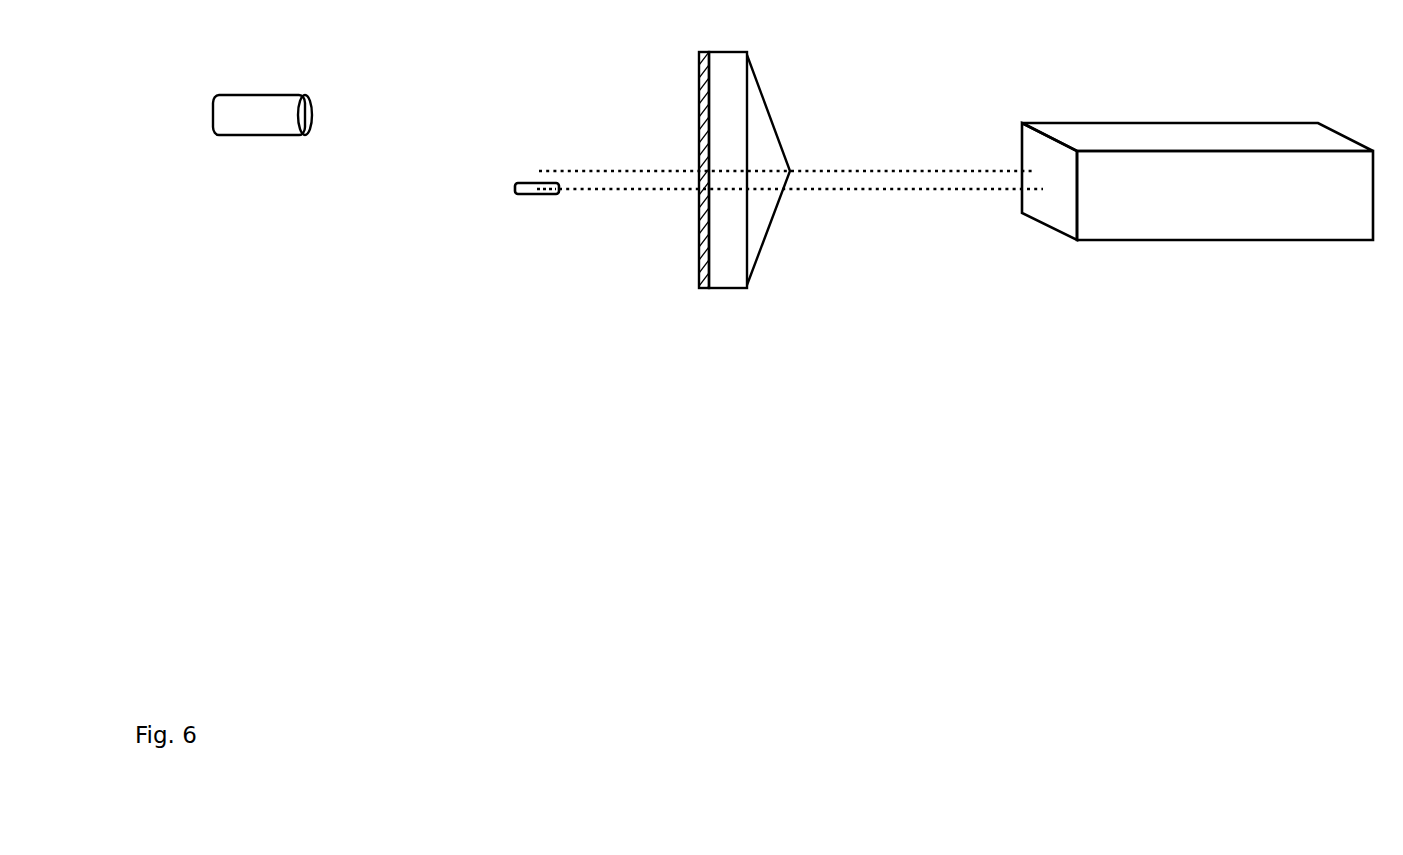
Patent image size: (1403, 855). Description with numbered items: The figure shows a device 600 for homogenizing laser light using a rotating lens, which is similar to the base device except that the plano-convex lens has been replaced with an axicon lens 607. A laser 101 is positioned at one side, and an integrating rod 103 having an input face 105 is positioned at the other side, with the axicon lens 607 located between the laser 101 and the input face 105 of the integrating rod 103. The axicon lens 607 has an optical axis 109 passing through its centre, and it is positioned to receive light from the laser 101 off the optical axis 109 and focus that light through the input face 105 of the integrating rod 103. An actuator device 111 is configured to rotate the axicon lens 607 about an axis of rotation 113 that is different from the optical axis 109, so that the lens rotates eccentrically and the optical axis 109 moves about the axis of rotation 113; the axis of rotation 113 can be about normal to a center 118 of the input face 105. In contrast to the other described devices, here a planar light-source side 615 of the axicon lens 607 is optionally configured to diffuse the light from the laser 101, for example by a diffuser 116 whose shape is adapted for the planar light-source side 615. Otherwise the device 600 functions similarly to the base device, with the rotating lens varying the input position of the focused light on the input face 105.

The laser 101 is at (288, 134).
The integrating rod 103 is at (1245, 233).
The input face 105 is at (1069, 225).
The optical axis 109 is at (538, 171).
The actuator device 111 is at (533, 194).
The axis of rotation 113 is at (657, 191).
The diffuser 116 is at (703, 63).
The center of input face 118 is at (1053, 170).
The device 600 is at (330, 330).
The axicon lens 607 is at (738, 285).
The light-source side 615 is at (683, 127).